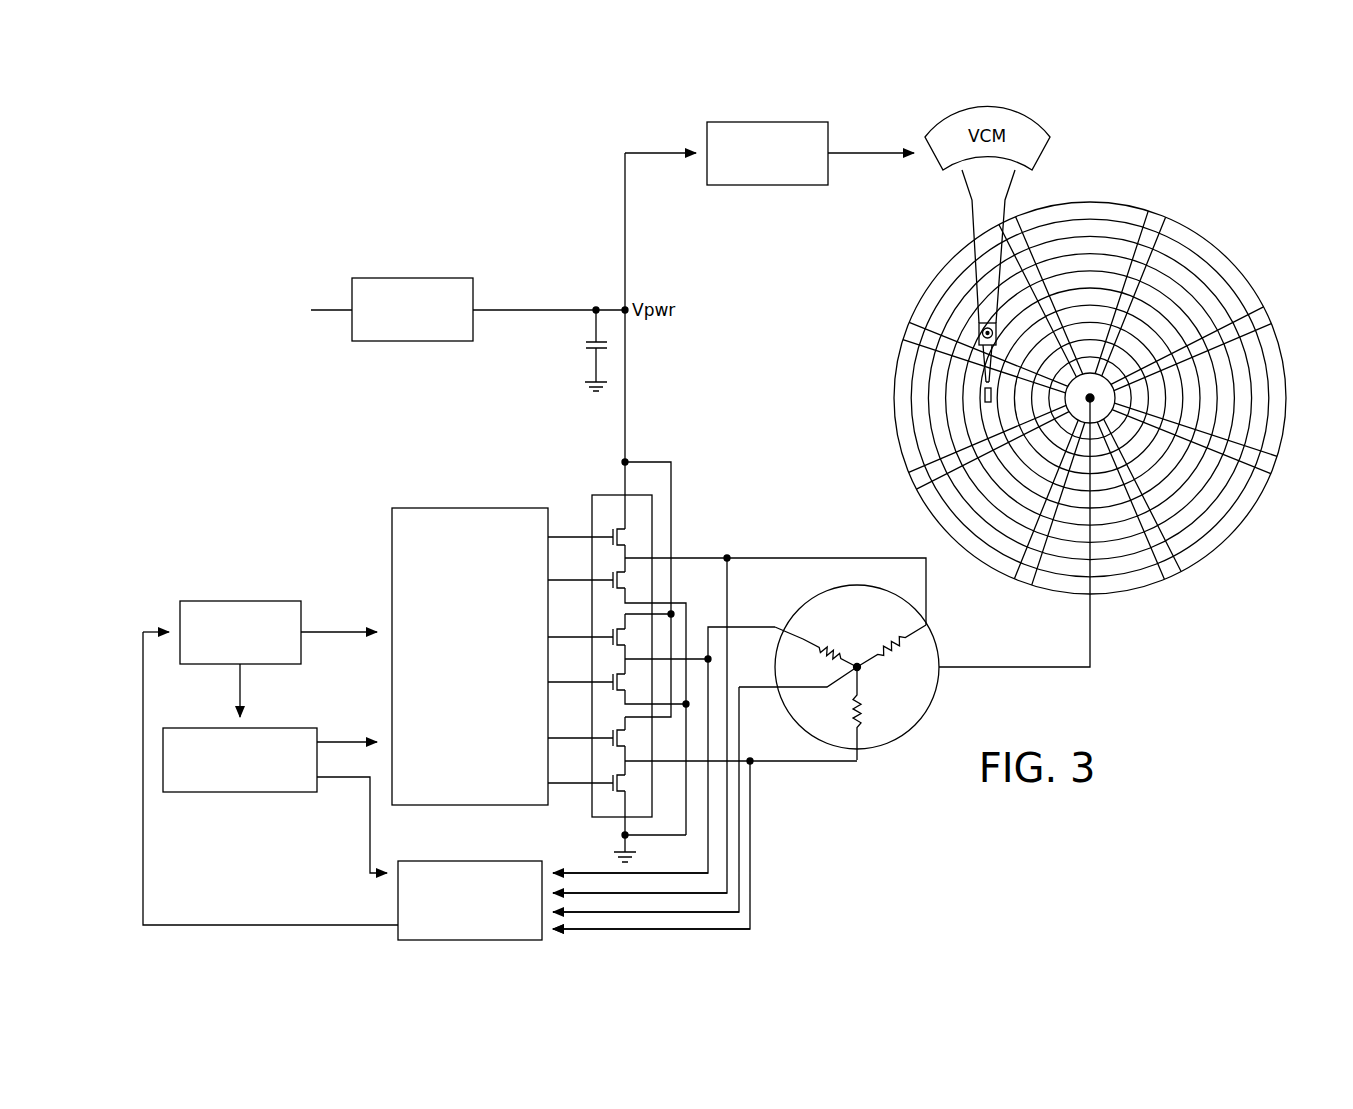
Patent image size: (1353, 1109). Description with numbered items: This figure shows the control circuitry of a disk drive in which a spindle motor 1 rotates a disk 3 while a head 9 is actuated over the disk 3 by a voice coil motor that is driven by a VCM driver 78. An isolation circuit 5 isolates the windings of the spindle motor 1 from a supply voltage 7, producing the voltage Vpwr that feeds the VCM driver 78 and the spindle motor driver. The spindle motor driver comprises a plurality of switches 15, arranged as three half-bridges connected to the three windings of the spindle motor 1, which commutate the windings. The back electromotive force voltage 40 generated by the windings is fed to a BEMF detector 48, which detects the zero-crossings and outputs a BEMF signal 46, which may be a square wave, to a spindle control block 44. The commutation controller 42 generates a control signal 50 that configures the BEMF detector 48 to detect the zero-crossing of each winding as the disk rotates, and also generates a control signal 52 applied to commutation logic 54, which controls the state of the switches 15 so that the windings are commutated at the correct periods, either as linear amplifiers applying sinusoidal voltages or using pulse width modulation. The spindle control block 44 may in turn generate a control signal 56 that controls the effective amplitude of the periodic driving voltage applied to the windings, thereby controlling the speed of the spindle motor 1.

The spindle motor 1 is at (937, 688).
The disk 3 is at (1225, 250).
The isolation circuit 5 is at (412, 278).
The supply voltage 7 is at (329, 308).
The head 9 is at (982, 398).
The switches 15 is at (606, 495).
The back electromotive force (BEMF) voltage 40 is at (578, 868).
The commutation controller 42 is at (240, 792).
The spindle control block 44 is at (281, 664).
The BEMF signal 46 is at (274, 925).
The BEMF detector 48 is at (470, 861).
The control signal 50 is at (370, 825).
The control signal 52 is at (348, 740).
The commutation logic 54 is at (470, 508).
The control signal 56 is at (339, 630).
The VCM driver 78 is at (768, 187).